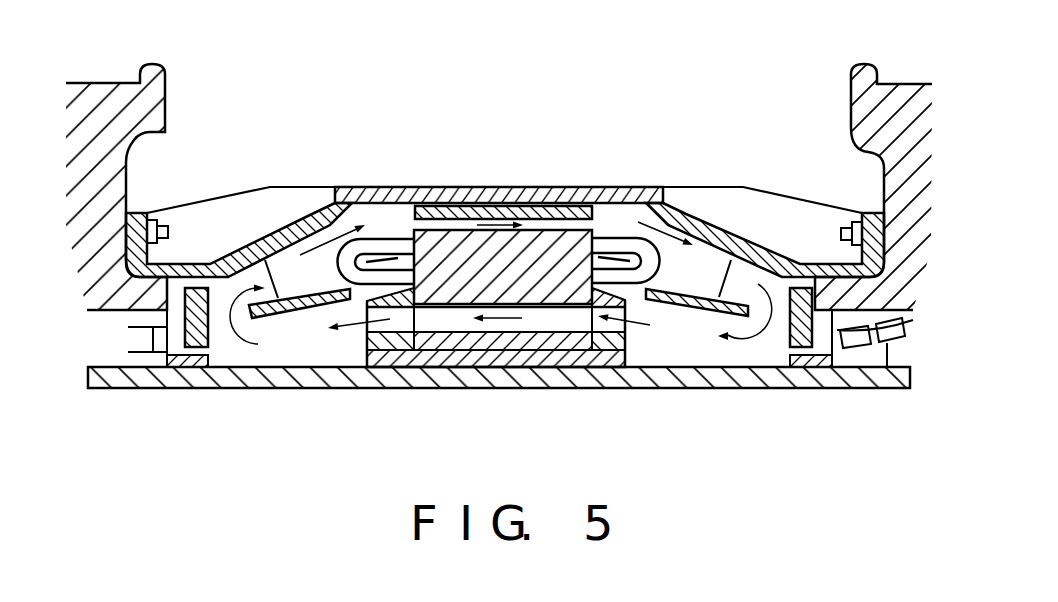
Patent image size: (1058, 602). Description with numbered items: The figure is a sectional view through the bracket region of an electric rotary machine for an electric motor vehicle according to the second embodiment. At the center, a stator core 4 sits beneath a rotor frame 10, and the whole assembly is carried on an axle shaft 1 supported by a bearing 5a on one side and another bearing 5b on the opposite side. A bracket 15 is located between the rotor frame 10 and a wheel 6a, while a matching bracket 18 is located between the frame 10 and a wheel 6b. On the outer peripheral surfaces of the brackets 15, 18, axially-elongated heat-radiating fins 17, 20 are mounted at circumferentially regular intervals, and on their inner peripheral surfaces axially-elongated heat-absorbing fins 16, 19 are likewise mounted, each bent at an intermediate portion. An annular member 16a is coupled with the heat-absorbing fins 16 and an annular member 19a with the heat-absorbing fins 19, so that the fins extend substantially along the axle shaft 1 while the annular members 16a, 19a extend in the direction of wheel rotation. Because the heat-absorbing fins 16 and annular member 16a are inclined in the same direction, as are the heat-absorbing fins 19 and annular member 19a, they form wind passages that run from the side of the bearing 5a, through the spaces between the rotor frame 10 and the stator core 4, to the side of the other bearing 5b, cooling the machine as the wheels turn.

The axle shaft 1 is at (410, 372).
The stator core 4 is at (553, 240).
The bearing 5a is at (115, 348).
The bearing 5b is at (865, 350).
The wheel 6a is at (100, 93).
The wheel 6b is at (910, 93).
The rotor frame 10 is at (502, 187).
The bracket 15 is at (298, 227).
The heat-absorbing fin 16 is at (297, 283).
The annular member 16a is at (270, 310).
The heat-radiating fin 17 is at (237, 197).
The bracket 18 is at (716, 233).
The heat-absorbing fin 19 is at (705, 283).
The annular member 19a is at (674, 293).
The heat-radiating fin 20 is at (788, 210).